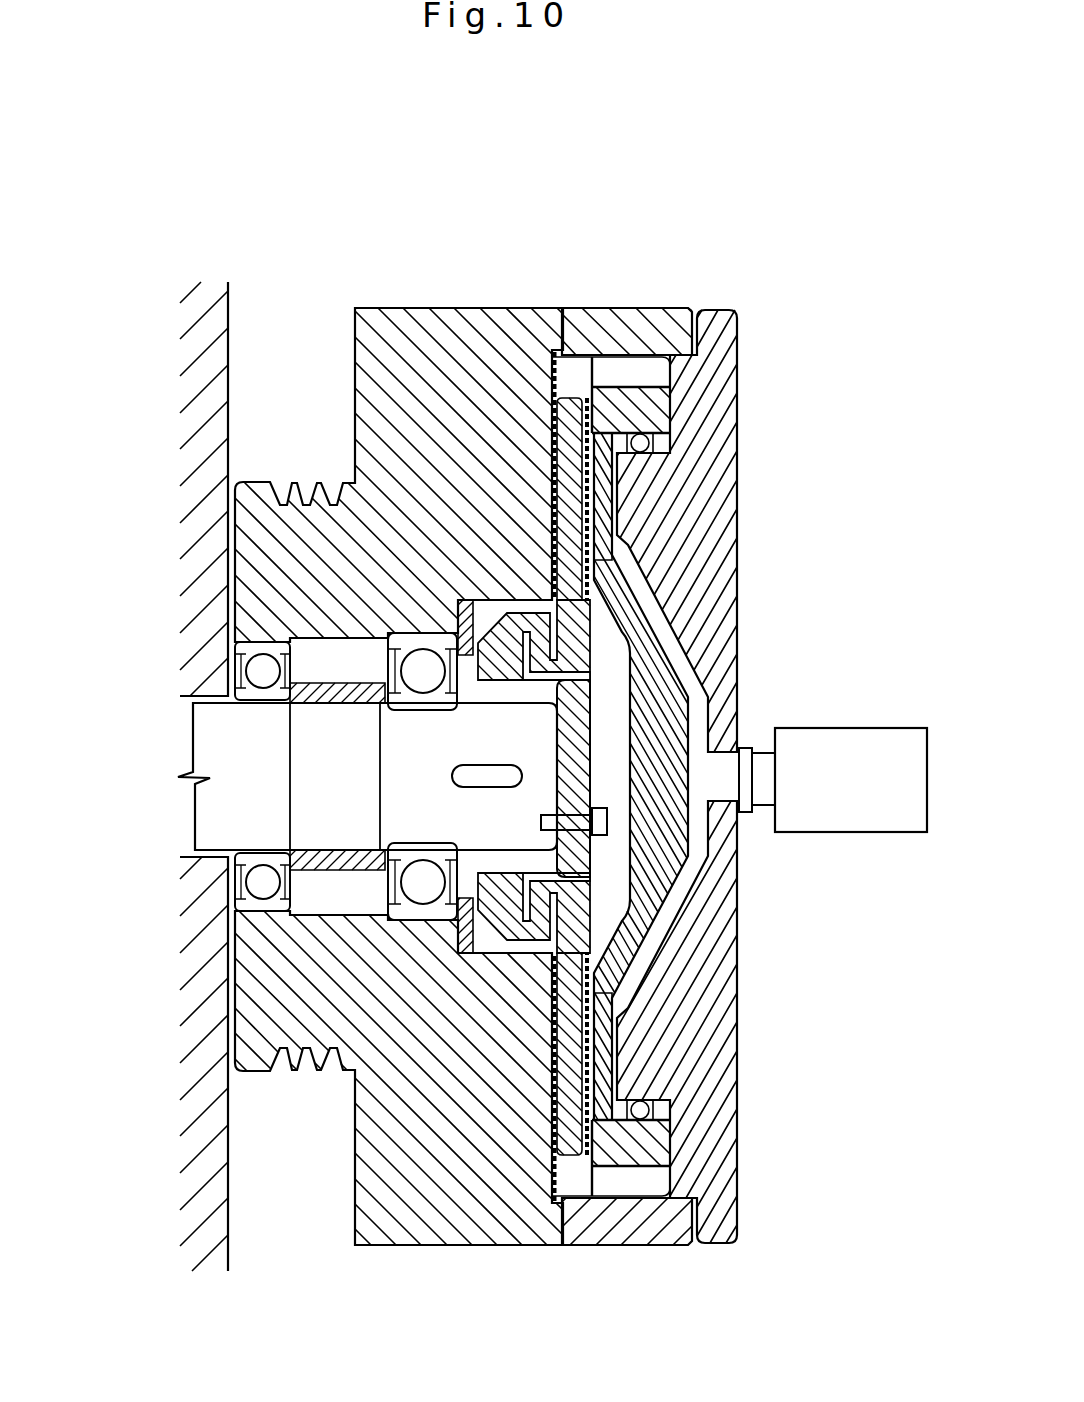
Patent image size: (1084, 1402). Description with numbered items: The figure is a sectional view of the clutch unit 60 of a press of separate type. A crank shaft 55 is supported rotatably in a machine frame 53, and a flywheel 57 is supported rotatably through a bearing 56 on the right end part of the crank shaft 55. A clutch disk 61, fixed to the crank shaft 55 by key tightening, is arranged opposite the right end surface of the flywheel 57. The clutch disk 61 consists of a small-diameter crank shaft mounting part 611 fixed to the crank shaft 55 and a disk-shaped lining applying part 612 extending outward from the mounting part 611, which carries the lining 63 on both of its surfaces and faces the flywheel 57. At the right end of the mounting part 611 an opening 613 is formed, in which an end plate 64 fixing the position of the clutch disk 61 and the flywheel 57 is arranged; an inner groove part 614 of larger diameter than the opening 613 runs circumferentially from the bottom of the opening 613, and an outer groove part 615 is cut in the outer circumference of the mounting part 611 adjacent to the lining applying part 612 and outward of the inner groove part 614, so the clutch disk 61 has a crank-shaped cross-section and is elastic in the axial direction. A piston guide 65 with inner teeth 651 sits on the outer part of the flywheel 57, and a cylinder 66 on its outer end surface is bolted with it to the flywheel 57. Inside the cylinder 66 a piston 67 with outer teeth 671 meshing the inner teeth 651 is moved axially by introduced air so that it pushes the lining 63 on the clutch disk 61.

The machine frame 53 is at (213, 362).
The crank shaft 55 is at (235, 752).
The bearing 56 is at (422, 648).
The flywheel 57 is at (420, 308).
The clutch unit 60 is at (728, 241).
The clutch disk 61 is at (692, 776).
The lining 63 is at (613, 385).
The end plate 64 is at (577, 758).
The piston guide 65 is at (650, 1220).
The cylinder 66 is at (697, 1042).
The piston 67 is at (650, 885).
The crank shaft mounting part 611 is at (600, 530).
The lining applying part 612 is at (645, 450).
The opening 613 is at (605, 690).
The inner groove part 614 is at (578, 702).
The outer groove part 615 is at (486, 640).
The inner teeth 651 is at (642, 1183).
The outer teeth 671 is at (620, 1160).